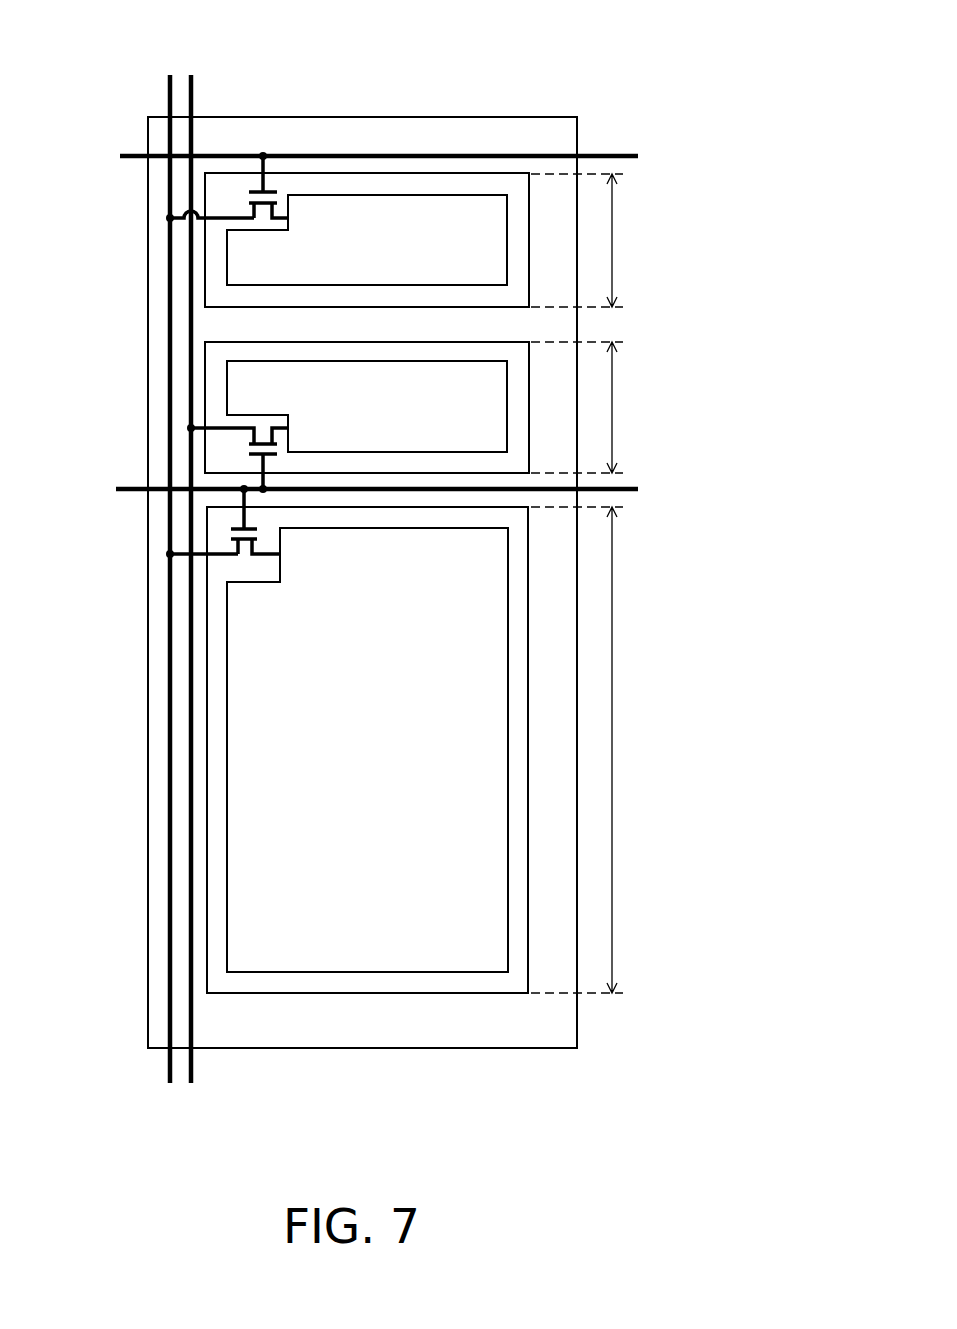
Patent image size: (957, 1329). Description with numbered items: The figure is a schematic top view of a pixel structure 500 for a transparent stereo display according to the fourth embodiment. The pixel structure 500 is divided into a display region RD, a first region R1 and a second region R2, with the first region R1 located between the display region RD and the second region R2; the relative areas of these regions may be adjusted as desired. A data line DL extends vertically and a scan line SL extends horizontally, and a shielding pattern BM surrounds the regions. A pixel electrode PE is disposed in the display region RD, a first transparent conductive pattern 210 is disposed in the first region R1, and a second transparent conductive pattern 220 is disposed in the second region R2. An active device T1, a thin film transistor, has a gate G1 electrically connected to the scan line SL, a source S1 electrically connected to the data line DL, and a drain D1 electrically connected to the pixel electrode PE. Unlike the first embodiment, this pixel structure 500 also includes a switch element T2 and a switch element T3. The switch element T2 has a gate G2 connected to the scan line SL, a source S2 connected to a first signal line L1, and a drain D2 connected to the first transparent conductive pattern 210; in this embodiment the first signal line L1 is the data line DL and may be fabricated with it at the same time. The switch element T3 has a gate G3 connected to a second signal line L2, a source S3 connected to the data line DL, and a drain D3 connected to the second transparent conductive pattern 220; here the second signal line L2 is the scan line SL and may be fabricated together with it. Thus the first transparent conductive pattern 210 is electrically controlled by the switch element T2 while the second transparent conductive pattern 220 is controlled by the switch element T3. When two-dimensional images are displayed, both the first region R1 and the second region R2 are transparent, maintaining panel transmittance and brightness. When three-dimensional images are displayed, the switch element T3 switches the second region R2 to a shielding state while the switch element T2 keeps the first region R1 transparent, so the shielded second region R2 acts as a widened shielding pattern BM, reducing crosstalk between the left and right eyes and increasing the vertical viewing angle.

The pixel structure 500 is at (369, 571).
The shielding pattern BM is at (160, 682).
The data line DL is at (163, 563).
The first signal line L1 is at (196, 563).
The second signal line L2 is at (363, 155).
The scan line SL is at (362, 490).
The pixel electrode PE is at (227, 823).
The first transparent conductive pattern 210 is at (226, 377).
The second transparent conductive pattern 220 is at (226, 258).
The active device T1 is at (162, 562).
The gate G1 is at (242, 519).
The source S1 is at (217, 556).
The drain D1 is at (267, 557).
The switch element T2 is at (166, 422).
The gate G2 is at (262, 460).
The source S2 is at (220, 426).
The drain D2 is at (273, 427).
The switch element T3 is at (253, 118).
The gate G3 is at (268, 190).
The source S3 is at (223, 215).
The drain D3 is at (286, 212).
The first region R1 is at (592, 407).
The second region R2 is at (592, 240).
The display region RD is at (593, 750).